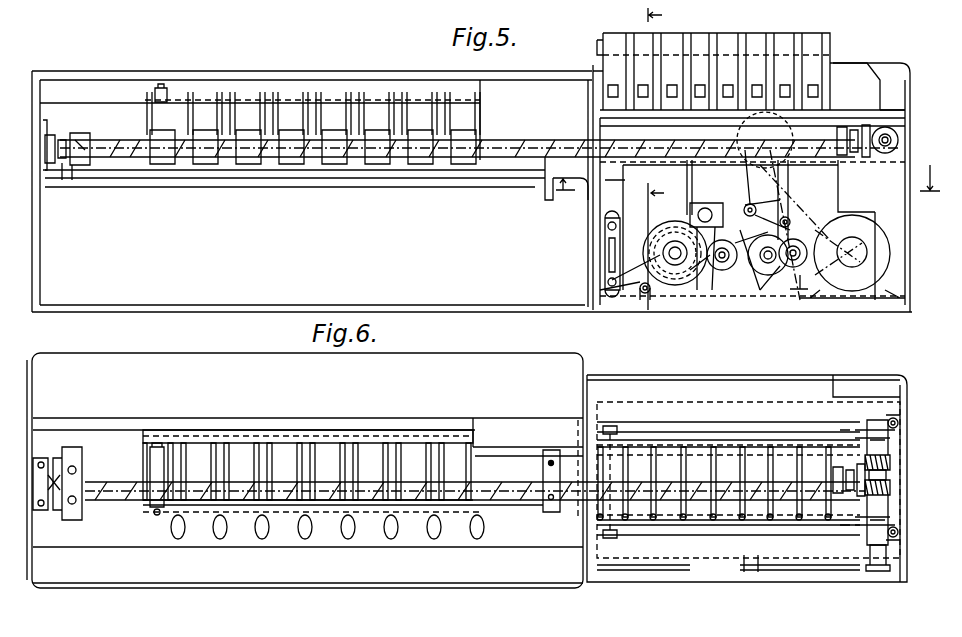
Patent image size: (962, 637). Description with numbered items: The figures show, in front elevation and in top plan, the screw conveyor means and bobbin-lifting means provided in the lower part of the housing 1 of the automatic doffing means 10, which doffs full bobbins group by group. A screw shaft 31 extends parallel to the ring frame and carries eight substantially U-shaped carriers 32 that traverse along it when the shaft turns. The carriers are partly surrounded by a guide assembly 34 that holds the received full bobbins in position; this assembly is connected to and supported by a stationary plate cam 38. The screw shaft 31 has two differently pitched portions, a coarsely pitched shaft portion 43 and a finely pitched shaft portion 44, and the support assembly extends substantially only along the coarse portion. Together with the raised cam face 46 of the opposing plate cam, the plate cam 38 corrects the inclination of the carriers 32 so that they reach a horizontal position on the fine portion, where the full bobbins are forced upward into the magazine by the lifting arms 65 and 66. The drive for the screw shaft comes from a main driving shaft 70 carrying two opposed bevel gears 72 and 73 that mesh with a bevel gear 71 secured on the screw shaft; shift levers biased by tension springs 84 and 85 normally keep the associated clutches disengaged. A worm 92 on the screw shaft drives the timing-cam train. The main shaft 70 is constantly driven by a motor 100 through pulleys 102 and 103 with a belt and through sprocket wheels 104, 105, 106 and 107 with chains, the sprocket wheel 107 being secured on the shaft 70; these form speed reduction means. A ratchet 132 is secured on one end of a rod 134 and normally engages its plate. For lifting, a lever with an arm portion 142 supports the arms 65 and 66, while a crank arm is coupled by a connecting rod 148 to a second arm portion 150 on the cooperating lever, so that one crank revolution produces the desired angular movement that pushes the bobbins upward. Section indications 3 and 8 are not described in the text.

In FIG. 5, the housing 1 is at (312, 78).
In FIG. 6, the housing 1 is at (362, 582).
In FIG. 5, the feed screw shaft 3 is at (495, 140).
In FIG. 5, the section line 8 is at (662, 158).
In FIG. 5, the automatic doffing means 10 is at (742, 177).
In FIG. 5, the screw shaft 31 is at (103, 148).
In FIG. 6, the screw shaft 31 is at (113, 488).
In FIG. 5, the carriers 32 is at (178, 100).
In FIG. 6, the carriers 32 is at (160, 505).
In FIG. 5, the guide assembly 34 is at (232, 92).
In FIG. 6, the stationary plate cam 38 is at (505, 453).
In FIG. 6, the coarsely pitched shaft portion 43 is at (490, 495).
In FIG. 5, the finely pitched shaft portion 44 is at (721, 179).
In FIG. 6, the finely pitched shaft portion 44 is at (665, 482).
In FIG. 6, the raised cam face 46 is at (533, 508).
In FIG. 6, the lifting arm 65 is at (740, 430).
In FIG. 5, the lifting arm 66 is at (705, 225).
In FIG. 6, the lifting arm 66 is at (717, 525).
In FIG. 5, the main driving shaft 70 is at (884, 153).
In FIG. 6, the main driving shaft 70 is at (887, 487).
In FIG. 5, the bevel gear 71 is at (866, 125).
In FIG. 6, the bevel gear 72 is at (890, 508).
In FIG. 6, the bevel gear 73 is at (890, 462).
In FIG. 6, the tension spring 84 is at (898, 536).
In FIG. 6, the tension spring 85 is at (898, 423).
In FIG. 6, the worm 92 is at (852, 493).
In FIG. 5, the motor 100 is at (885, 250).
In FIG. 5, the pulley 102 is at (855, 268).
In FIG. 5, the pulley 103 is at (835, 268).
In FIG. 5, the sprocket wheel 104 is at (795, 267).
In FIG. 5, the sprocket wheel 105 is at (798, 165).
In FIG. 6, the sprocket wheel 105 is at (742, 571).
In FIG. 5, the sprocket wheel 106 is at (765, 201).
In FIG. 6, the sprocket wheel 106 is at (775, 572).
In FIG. 5, the sprocket wheel 107 is at (893, 110).
In FIG. 6, the sprocket wheel 107 is at (887, 572).
In FIG. 5, the ratchet 132 is at (663, 290).
In FIG. 5, the rod 134 is at (645, 296).
In FIG. 5, the arm portion 142 is at (605, 290).
In FIG. 5, the connecting rod 148 is at (690, 224).
In FIG. 5, the second arm portion 150 is at (730, 240).